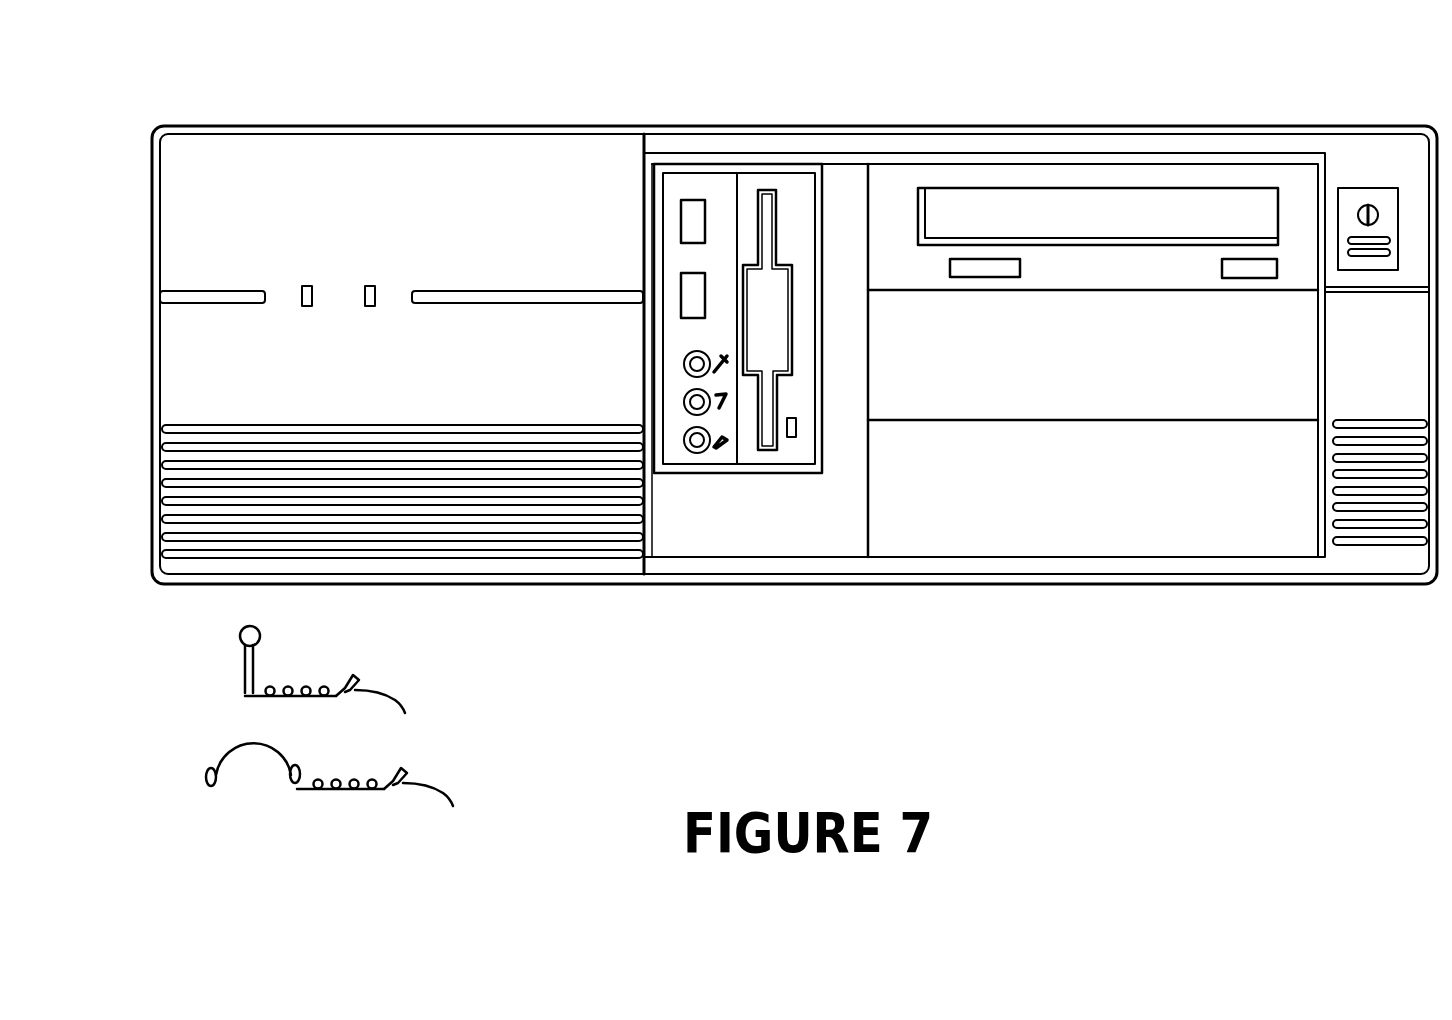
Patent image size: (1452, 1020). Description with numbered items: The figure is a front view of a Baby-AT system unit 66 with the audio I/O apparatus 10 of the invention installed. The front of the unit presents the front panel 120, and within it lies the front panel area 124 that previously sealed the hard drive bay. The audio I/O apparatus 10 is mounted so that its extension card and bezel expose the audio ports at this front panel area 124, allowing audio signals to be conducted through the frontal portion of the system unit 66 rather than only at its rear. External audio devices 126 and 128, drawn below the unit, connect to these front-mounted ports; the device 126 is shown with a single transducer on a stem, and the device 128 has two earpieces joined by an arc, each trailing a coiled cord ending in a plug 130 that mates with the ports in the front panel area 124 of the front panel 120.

The Baby-AT system unit 66 is at (1174, 105).
The audio I/O apparatus 10 is at (677, 257).
The front panel area 124 is at (699, 345).
The front panel 120 is at (1209, 533).
The external audio device 126 is at (242, 650).
The external audio device 128 is at (230, 740).
The plug connector 130 is at (412, 752).